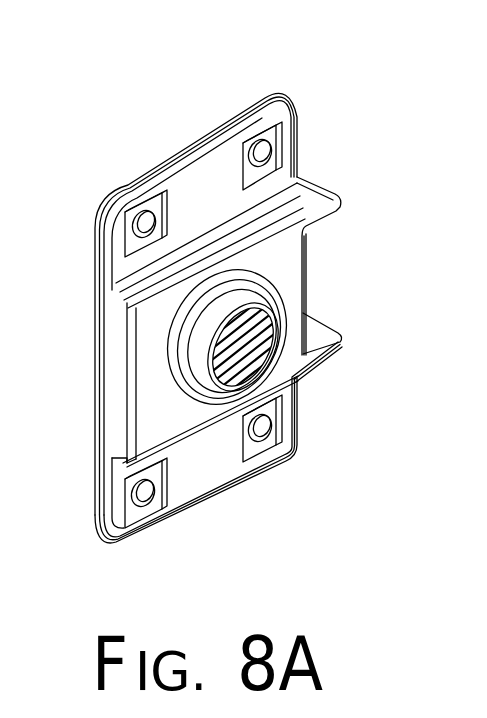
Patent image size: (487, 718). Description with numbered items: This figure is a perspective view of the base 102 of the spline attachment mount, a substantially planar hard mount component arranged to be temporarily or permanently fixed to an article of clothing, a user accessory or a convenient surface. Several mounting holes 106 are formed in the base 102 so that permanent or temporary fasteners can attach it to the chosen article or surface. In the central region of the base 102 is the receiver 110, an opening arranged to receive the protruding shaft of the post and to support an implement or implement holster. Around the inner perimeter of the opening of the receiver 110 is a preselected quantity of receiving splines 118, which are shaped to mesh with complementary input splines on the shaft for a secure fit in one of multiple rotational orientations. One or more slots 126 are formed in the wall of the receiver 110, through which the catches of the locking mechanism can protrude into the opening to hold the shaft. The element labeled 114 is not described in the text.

The base 102 is at (357, 62).
The mounting holes 106 is at (256, 140).
The receiver 110 is at (183, 393).
The flange 114 is at (314, 273).
The receiving splines 118 is at (262, 348).
The slots 126 is at (210, 352).